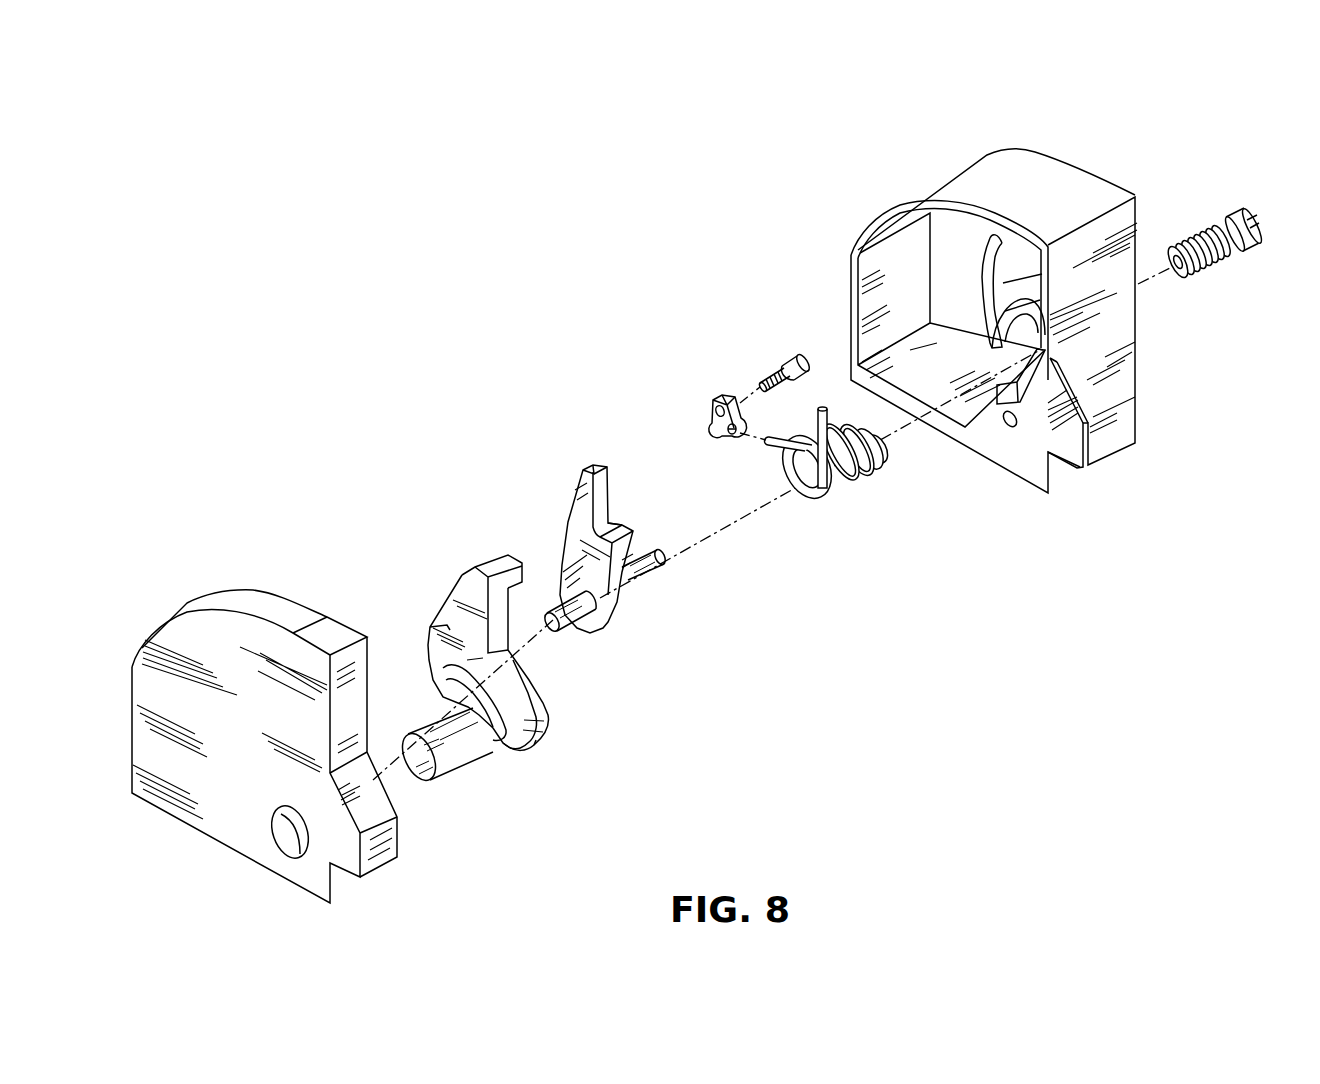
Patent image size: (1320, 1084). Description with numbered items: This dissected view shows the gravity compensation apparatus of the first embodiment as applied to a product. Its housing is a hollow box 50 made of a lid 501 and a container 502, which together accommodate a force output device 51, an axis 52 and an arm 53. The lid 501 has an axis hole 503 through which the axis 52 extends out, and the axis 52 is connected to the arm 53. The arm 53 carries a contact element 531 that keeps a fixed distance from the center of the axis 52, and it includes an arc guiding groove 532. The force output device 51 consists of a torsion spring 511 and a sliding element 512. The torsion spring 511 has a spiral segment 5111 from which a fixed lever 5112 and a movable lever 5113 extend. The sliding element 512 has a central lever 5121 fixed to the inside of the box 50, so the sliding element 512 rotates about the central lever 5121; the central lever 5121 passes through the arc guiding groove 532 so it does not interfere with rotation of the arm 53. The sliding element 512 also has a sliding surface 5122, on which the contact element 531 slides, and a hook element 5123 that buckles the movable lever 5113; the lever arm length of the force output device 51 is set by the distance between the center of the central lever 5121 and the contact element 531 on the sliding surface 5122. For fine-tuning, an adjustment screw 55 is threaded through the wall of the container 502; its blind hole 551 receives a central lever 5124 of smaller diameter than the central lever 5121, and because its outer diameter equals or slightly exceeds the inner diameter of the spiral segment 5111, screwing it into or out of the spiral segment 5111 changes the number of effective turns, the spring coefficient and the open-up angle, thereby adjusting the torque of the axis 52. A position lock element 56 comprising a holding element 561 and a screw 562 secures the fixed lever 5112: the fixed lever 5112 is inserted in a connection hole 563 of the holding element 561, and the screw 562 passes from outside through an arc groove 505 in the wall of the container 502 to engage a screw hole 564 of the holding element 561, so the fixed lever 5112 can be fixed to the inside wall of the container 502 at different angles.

The box 50 is at (702, 150).
The lid 501 is at (257, 600).
The container 502 is at (958, 183).
The hole 503 is at (289, 804).
The arc groove 505 is at (987, 267).
The force output device 51 is at (990, 600).
The torsion spring 511 is at (843, 615).
The spiral segment 5111 is at (858, 460).
The fixed lever 5112 is at (778, 447).
The movable lever 5113 is at (830, 414).
The sliding element 512 is at (700, 688).
The central lever 5121 is at (572, 609).
The sliding surface 5122 is at (590, 462).
The hook element 5123 is at (620, 523).
The central lever 5124 is at (653, 567).
The axis 52 is at (458, 752).
The arm 53 is at (455, 631).
The contact element 531 is at (502, 558).
The arc guiding groove 532 is at (540, 739).
The adjustment screw 55 is at (1227, 263).
The blind hole 551 is at (1176, 275).
The position lock element 56 is at (812, 293).
The holding element 561 is at (723, 395).
The screw 562 is at (798, 358).
The connection hole 563 is at (718, 436).
The screw hole 564 is at (714, 404).